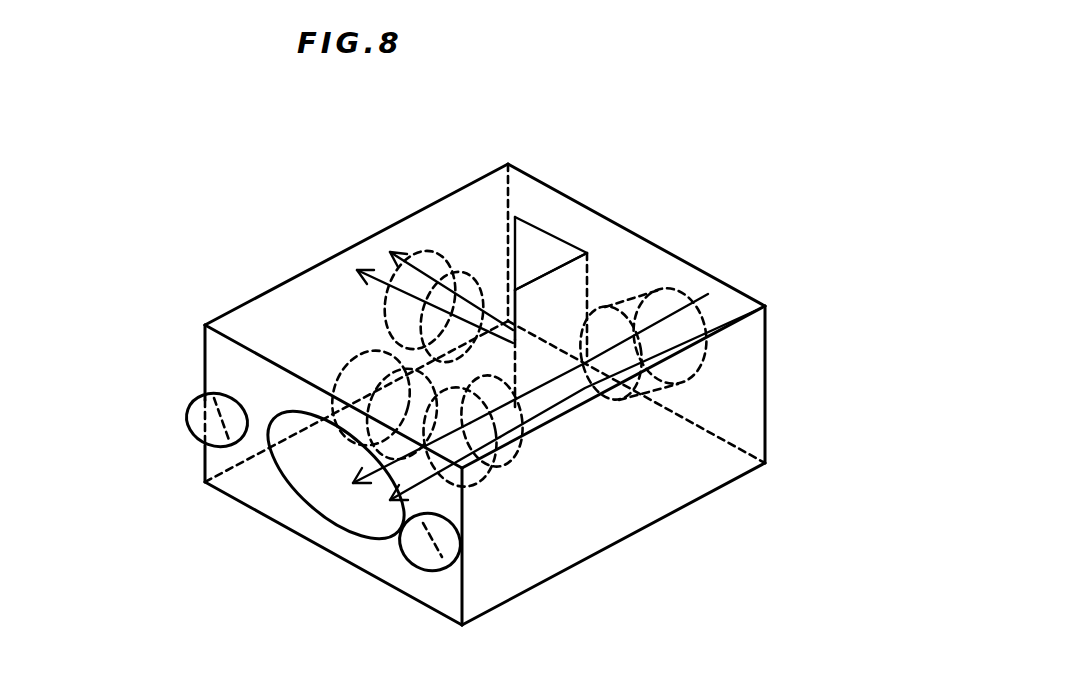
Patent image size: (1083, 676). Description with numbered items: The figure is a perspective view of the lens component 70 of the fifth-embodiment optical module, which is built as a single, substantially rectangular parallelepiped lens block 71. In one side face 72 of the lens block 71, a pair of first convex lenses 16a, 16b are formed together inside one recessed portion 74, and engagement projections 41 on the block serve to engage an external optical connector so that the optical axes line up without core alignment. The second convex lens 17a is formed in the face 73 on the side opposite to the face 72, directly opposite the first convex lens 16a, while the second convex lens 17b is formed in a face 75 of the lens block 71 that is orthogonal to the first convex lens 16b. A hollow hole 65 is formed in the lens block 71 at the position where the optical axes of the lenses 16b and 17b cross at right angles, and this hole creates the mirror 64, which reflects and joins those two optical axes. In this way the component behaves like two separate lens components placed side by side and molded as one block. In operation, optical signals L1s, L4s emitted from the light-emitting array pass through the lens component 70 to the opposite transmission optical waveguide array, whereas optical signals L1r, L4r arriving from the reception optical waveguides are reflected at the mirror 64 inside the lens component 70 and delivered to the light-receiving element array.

The lens component 70 is at (528, 384).
The lens block 71 is at (557, 272).
The mirror 64 is at (512, 336).
The hollow hole 65 is at (543, 250).
The face 73 is at (657, 270).
The face 75 is at (290, 313).
The side face 72 is at (438, 598).
The recessed portion 74 is at (357, 508).
The engagement projection 41 is at (198, 438).
The first convex lens 16a is at (476, 492).
The first convex lens 16b is at (362, 380).
The second convex lens 17a is at (682, 348).
The second convex lens 17b is at (463, 275).
The optical signal L1s is at (703, 290).
The optical signal L1r is at (300, 470).
The optical signal L4s is at (735, 310).
The optical signal L4r is at (300, 510).